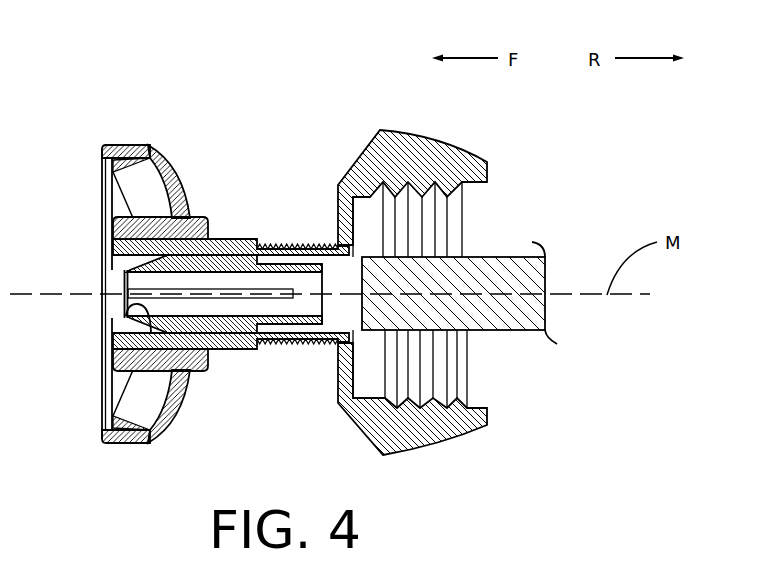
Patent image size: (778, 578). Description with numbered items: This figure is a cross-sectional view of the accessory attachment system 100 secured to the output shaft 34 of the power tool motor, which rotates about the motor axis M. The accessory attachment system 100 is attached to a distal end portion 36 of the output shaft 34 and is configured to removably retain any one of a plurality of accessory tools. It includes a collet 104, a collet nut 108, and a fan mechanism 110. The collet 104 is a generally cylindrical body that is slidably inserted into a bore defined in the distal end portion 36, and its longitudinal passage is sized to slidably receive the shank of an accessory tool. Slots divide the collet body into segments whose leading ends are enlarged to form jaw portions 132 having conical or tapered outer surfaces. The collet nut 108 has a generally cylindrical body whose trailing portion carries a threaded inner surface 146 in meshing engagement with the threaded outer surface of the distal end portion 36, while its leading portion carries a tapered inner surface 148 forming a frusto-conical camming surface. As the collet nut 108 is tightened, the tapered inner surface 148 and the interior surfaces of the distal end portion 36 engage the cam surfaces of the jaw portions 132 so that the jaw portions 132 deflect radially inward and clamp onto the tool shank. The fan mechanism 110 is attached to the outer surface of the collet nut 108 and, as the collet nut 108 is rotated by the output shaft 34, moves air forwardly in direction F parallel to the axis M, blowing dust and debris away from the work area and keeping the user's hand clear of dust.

The accessory attachment system 100 is at (115, 86).
The fan mechanism 110 is at (123, 447).
The jaw portions 132 is at (180, 265).
The collet nut 108 is at (240, 238).
The threaded inner surface 146 is at (283, 249).
The collet 104 is at (255, 322).
The tapered inner surface 148 is at (127, 307).
The distal end portion 36 is at (328, 323).
The output shaft 34 is at (500, 257).